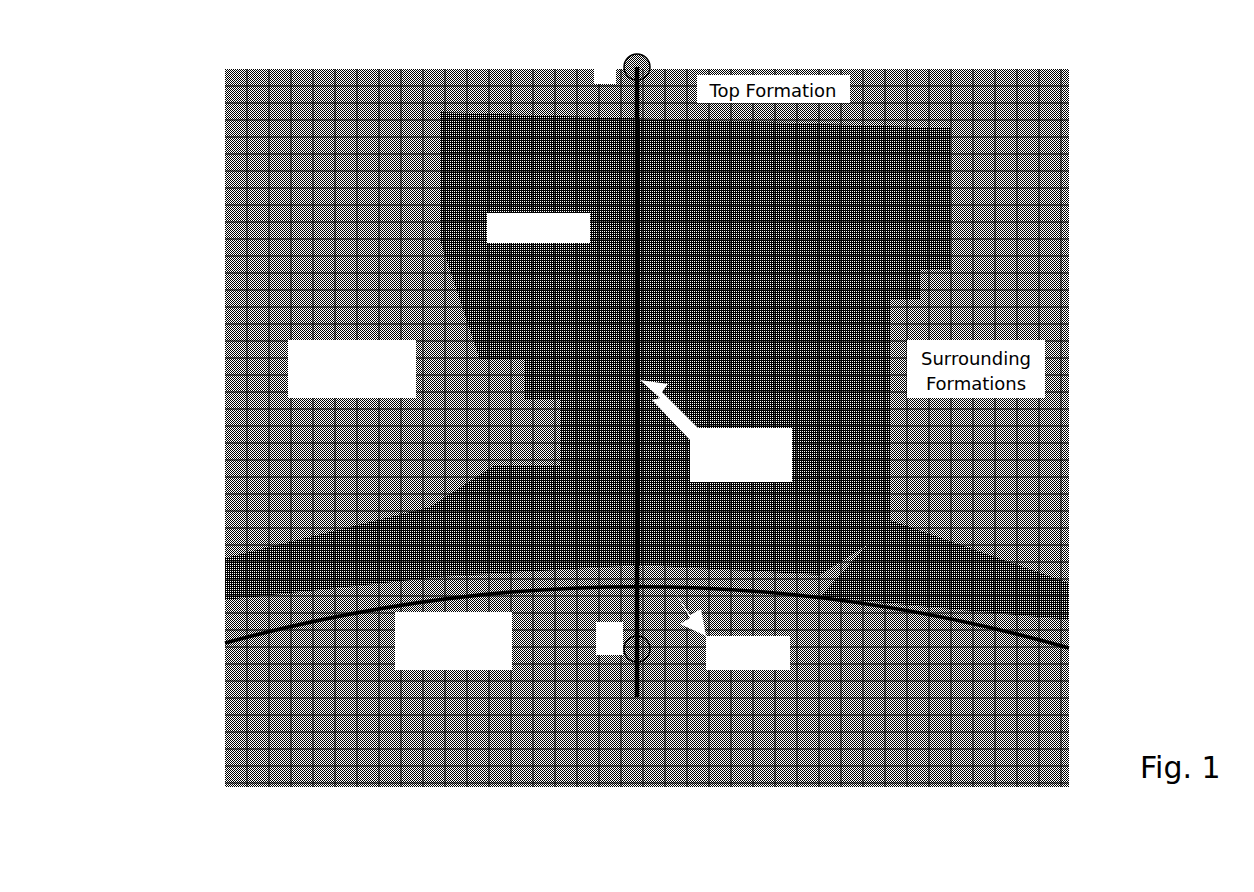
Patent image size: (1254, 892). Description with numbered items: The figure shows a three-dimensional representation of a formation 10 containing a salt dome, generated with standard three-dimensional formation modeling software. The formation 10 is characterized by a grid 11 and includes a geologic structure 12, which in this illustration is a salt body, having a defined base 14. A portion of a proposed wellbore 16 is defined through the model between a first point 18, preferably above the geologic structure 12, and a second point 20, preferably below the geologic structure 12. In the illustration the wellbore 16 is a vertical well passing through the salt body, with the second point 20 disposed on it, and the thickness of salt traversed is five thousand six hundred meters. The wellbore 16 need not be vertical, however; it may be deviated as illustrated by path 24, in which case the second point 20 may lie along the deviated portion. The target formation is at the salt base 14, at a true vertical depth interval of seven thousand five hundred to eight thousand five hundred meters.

The formation 10 is at (1096, 205).
The grid 11 is at (297, 204).
The geologic structure 12 is at (890, 150).
The base 14 is at (365, 588).
The proposed wellbore 16 is at (637, 138).
The first point 18 is at (649, 61).
The second point 20 is at (628, 657).
The path 24 is at (1050, 647).